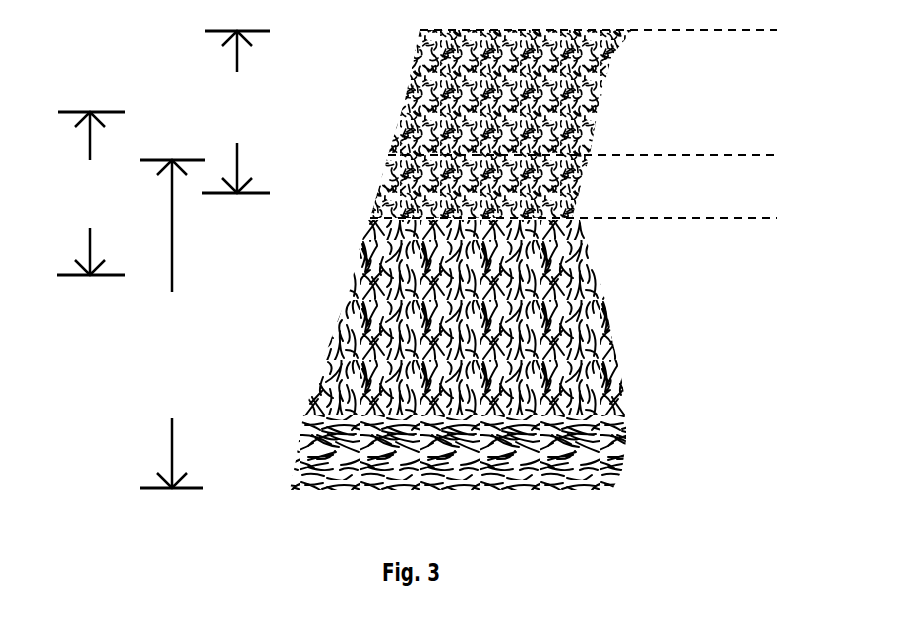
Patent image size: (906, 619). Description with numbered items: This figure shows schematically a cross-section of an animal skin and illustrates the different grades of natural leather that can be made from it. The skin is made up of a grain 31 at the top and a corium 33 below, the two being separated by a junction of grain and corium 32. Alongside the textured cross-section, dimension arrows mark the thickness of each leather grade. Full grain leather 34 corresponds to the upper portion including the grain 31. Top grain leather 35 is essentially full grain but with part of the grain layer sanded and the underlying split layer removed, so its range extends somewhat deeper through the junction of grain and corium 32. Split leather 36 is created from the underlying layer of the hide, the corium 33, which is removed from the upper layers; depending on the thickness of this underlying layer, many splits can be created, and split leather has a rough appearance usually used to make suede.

The grain 31 is at (582, 92).
The junction of grain and corium 32 is at (573, 186).
The corium 33 is at (508, 355).
The full grain leather 34 is at (236, 112).
The top grain leather 35 is at (91, 193).
The split leather 36 is at (172, 324).